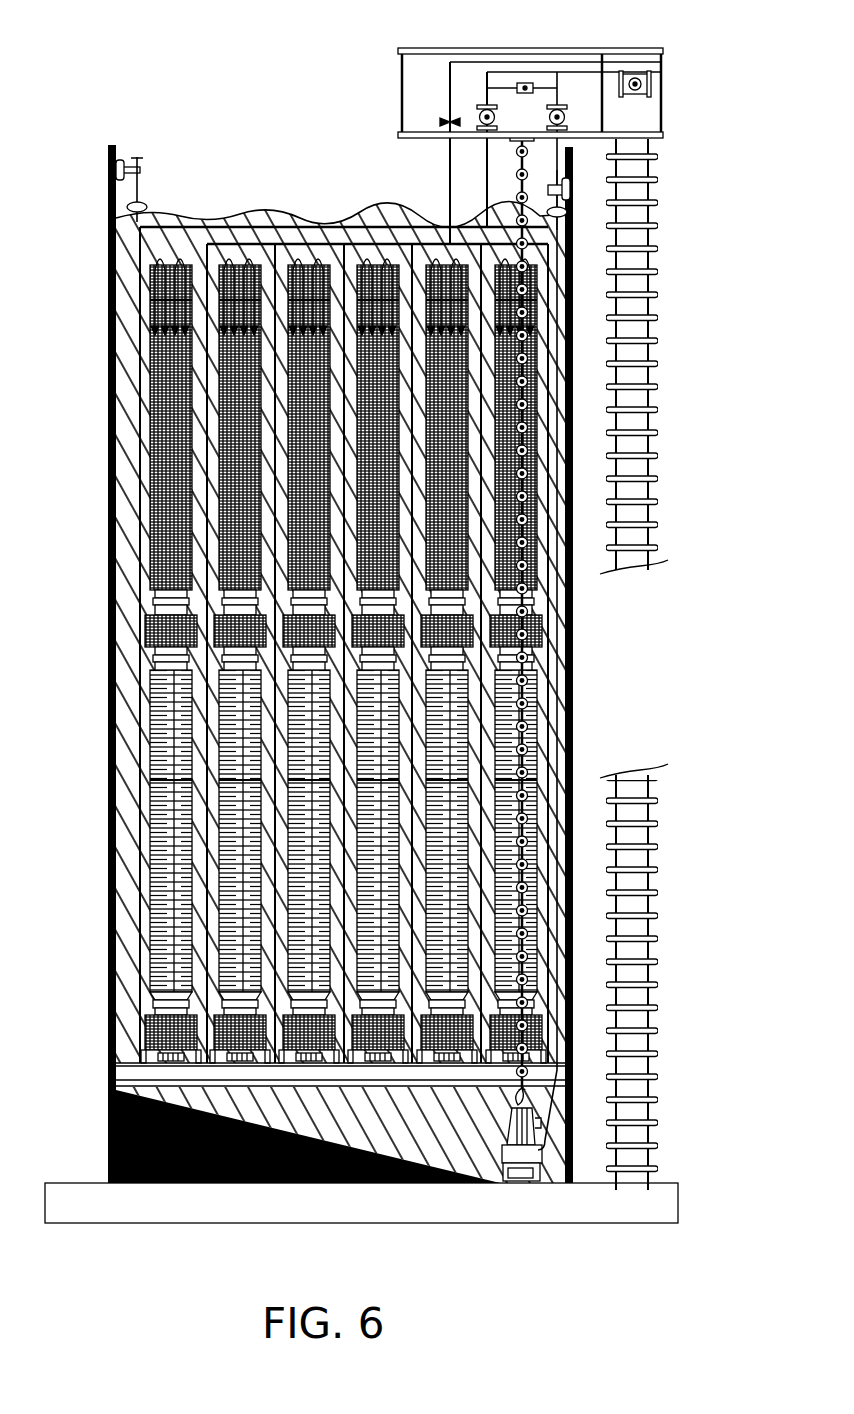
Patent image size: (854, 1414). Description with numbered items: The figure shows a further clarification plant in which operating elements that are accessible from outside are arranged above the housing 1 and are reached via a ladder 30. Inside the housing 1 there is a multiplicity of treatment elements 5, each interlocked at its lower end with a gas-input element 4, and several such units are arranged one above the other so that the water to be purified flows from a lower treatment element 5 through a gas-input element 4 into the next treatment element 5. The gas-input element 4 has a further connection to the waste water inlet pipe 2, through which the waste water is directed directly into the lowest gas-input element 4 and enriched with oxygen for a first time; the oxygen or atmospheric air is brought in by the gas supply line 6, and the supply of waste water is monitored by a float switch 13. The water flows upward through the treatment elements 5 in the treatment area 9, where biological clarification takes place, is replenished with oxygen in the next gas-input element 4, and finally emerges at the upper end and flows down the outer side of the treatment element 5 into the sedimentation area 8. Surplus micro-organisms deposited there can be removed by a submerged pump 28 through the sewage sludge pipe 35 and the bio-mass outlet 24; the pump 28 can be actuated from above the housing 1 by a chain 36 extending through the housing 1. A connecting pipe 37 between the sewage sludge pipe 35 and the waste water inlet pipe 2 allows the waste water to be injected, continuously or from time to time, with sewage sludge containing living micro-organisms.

The housing 1 is at (108, 360).
The waste water inlet pipe 2 is at (485, 150).
The gas-input element 4 is at (150, 630).
The treatment element 5 is at (160, 433).
The gas supply line 6 is at (447, 190).
The sedimentation area 8 is at (421, 1125).
The treatment area 9 is at (125, 694).
The float switch 13 is at (108, 196).
The bio-mass outlet 24 is at (651, 83).
The submerged pump 28 is at (507, 1183).
The ladder 30 is at (637, 475).
The sewage sludge pipe 35 is at (557, 680).
The chain 36 is at (562, 713).
The connecting pipe 37 is at (545, 92).